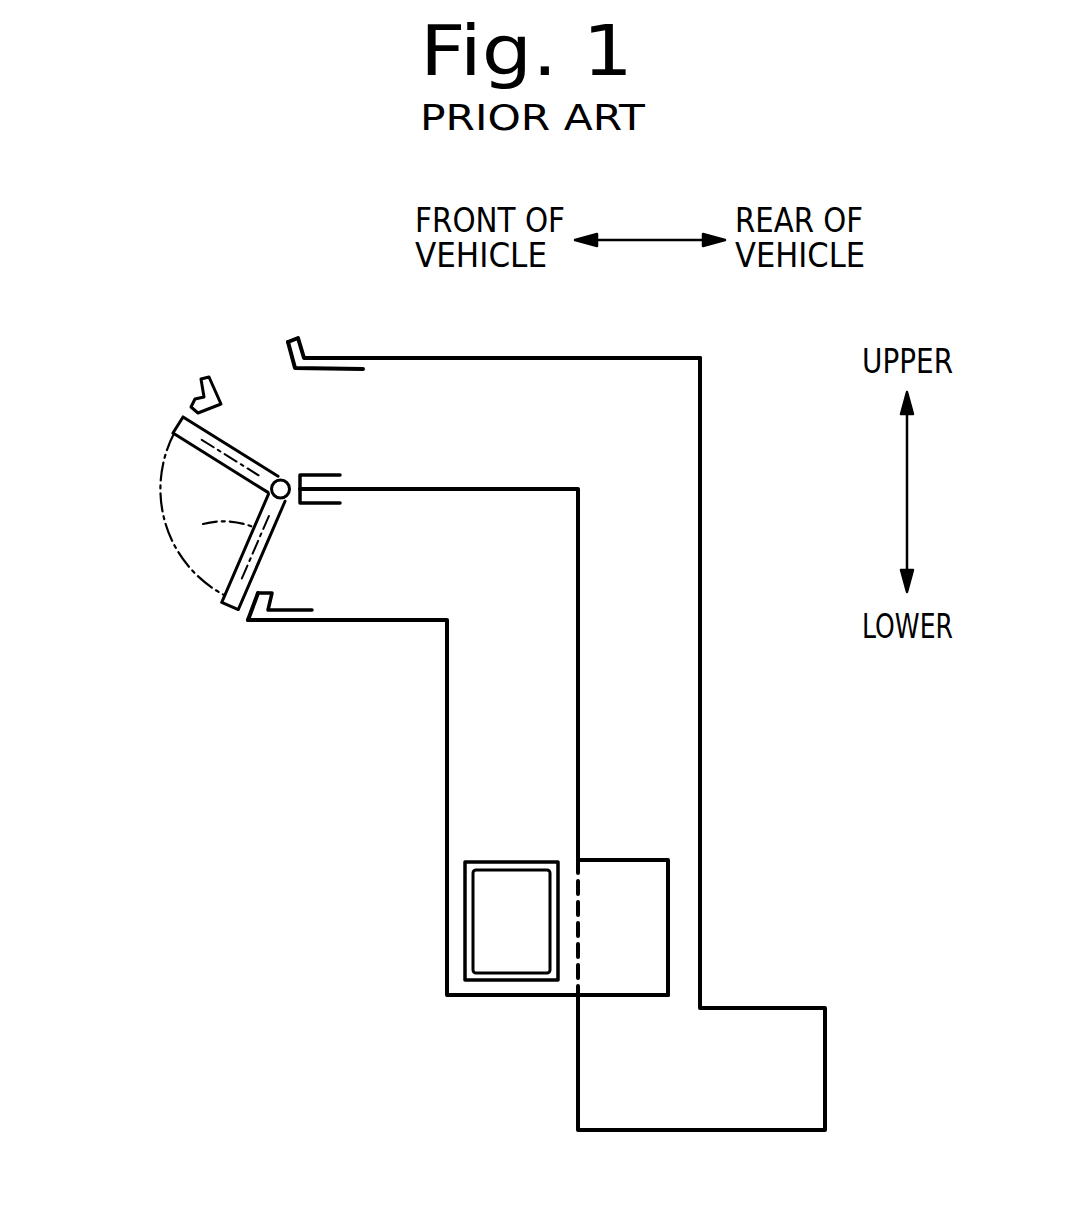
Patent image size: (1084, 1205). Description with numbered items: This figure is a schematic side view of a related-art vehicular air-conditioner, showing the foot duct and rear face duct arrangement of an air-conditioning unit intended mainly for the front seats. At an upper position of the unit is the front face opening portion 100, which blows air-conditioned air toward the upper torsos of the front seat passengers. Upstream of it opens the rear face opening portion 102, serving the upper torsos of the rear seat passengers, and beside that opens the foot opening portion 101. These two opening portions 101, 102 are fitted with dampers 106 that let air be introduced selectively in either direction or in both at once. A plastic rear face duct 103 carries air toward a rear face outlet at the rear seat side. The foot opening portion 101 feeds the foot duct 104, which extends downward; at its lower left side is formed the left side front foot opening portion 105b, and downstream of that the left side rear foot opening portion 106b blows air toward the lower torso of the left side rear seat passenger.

The front face opening portion 100 is at (258, 382).
The foot opening portion 101 is at (290, 540).
The rear face opening portion 102 is at (307, 428).
The rear face duct 103 is at (700, 633).
The foot duct 104 is at (447, 733).
The left side front foot opening portion 105b is at (522, 953).
The dampers 106 is at (203, 524).
The left side rear foot opening portion 106b is at (668, 922).